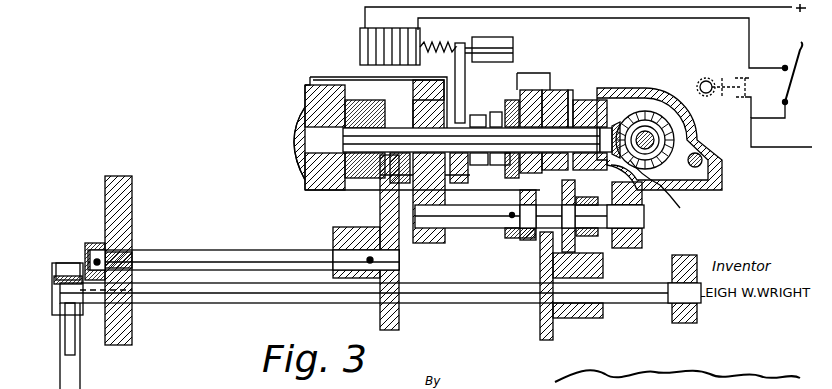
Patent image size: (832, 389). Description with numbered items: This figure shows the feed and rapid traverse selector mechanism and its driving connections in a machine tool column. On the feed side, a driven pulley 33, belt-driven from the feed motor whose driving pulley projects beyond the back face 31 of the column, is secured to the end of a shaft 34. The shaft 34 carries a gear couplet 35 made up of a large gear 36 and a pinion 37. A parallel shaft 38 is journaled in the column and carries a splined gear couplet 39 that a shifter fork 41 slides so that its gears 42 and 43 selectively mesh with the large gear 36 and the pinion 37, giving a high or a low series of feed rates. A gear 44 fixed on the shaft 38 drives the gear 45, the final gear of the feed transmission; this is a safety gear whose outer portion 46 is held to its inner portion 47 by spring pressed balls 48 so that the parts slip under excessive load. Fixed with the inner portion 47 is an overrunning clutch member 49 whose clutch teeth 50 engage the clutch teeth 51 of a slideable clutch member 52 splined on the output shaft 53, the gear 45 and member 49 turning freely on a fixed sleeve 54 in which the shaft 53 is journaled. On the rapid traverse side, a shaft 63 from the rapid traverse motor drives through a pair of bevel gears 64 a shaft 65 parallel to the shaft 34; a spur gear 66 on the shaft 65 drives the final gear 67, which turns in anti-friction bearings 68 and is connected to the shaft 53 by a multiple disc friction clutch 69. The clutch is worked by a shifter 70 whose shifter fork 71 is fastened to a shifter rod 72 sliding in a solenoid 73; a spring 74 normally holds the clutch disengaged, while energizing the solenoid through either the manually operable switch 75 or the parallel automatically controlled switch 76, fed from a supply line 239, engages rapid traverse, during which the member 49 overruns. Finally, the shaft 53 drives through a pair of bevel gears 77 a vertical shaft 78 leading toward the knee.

The back face 31 is at (105, 200).
The driven pulley 33 is at (55, 265).
The shaft 34 is at (286, 300).
The gear couplet 35 is at (560, 318).
The large gear 36 is at (540, 338).
The pinion 37 is at (600, 330).
The parallel shaft 38 is at (484, 226).
The gear couplet 39 is at (580, 232).
The shifter fork 41 is at (562, 236).
The gear 42 is at (528, 240).
The gear 43 is at (585, 252).
The gear 44 is at (516, 238).
The gear 45 is at (520, 90).
The outer portion 46 is at (548, 90).
The inner portion 47 is at (510, 100).
The spring pressed balls 48 is at (582, 120).
The clutch member 49 is at (510, 178).
The clutch teeth 50 is at (498, 165).
The clutch teeth 51 is at (496, 112).
The slideable clutch member 52 is at (478, 115).
The output shaft 53 is at (616, 120).
The fixed sleeve 54 is at (610, 152).
The shaft 63 is at (76, 345).
The bevel gears 64 is at (86, 254).
The shaft 65 is at (282, 252).
The spur gear 66 is at (380, 318).
The final gear 67 is at (360, 80).
The anti-friction bearings 68 is at (296, 112).
The multiple disc friction clutch 69 is at (416, 243).
The shifter 70 is at (454, 183).
The shifter fork 71 is at (455, 68).
The shifter rod 72 is at (500, 40).
The solenoid 73 is at (360, 48).
The spring 74 is at (446, 44).
The manually operable switch 75 is at (790, 88).
The automatically controlled switch 76 is at (726, 74).
The bevel gears 77 is at (660, 187).
The vertical shaft 78 is at (678, 100).
The supply line 239 is at (766, 8).